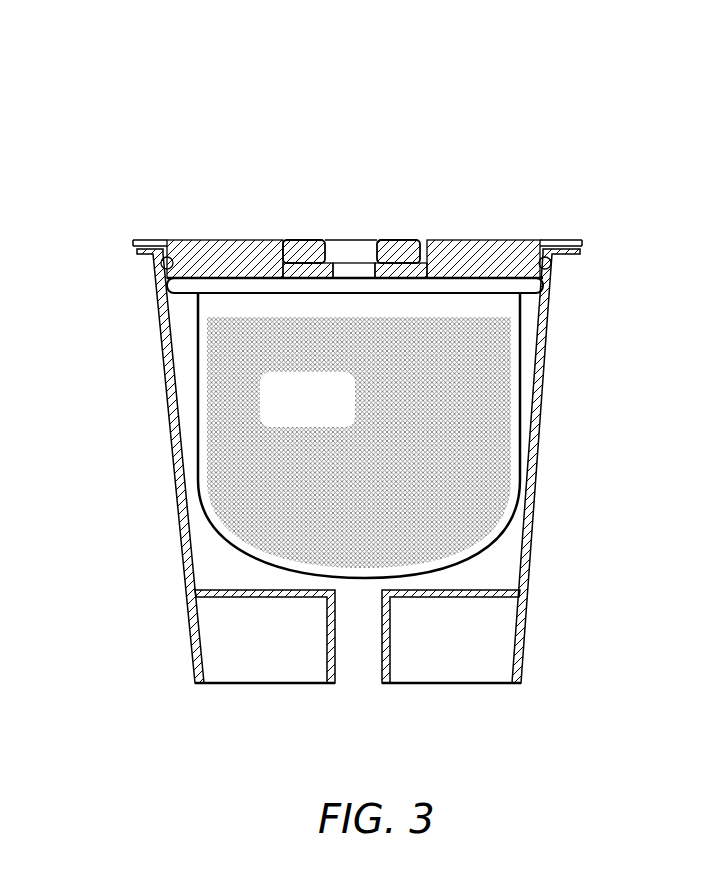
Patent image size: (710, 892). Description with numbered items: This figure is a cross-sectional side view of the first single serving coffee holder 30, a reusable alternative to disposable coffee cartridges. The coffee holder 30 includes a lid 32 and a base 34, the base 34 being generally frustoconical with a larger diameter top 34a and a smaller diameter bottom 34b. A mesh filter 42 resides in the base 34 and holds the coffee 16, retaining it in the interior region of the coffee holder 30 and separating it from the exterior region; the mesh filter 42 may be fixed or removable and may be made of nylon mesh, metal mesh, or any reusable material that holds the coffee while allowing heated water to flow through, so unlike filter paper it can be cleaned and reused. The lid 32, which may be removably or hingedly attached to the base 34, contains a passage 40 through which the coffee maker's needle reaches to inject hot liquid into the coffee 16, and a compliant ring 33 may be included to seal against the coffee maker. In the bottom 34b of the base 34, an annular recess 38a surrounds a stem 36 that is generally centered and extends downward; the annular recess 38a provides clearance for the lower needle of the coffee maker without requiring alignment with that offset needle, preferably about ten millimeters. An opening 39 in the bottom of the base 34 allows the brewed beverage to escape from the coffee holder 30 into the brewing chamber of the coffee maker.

The single serving coffee holder 30 is at (304, 186).
The lid 32 is at (500, 255).
The compliant ring 33 is at (293, 240).
The passage 40 is at (357, 272).
The base 34 is at (540, 460).
The top 34a is at (557, 280).
The bottom 34b is at (523, 673).
The mesh filter 42 is at (518, 505).
The coffee 16 is at (284, 410).
The stem 36 is at (392, 652).
The annular recess 38a is at (251, 671).
The opening 39 is at (357, 623).